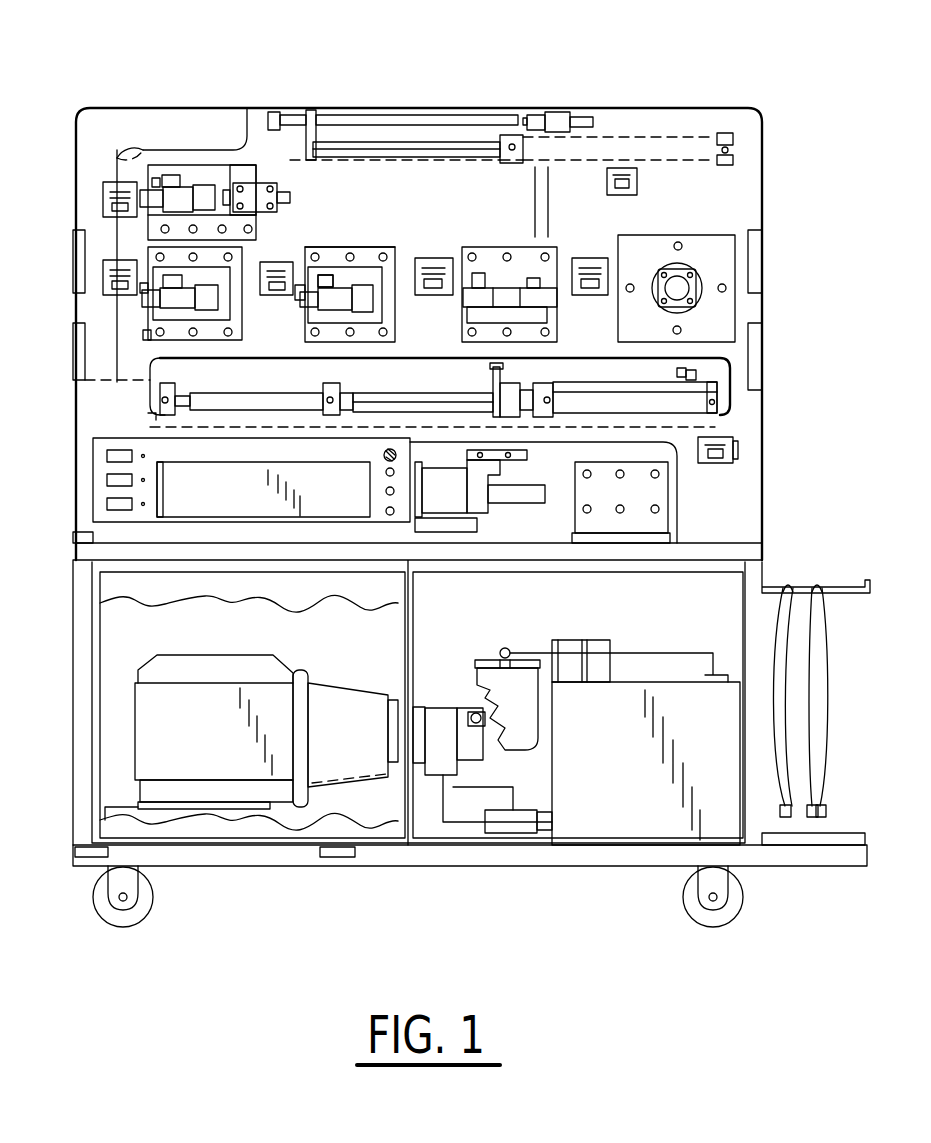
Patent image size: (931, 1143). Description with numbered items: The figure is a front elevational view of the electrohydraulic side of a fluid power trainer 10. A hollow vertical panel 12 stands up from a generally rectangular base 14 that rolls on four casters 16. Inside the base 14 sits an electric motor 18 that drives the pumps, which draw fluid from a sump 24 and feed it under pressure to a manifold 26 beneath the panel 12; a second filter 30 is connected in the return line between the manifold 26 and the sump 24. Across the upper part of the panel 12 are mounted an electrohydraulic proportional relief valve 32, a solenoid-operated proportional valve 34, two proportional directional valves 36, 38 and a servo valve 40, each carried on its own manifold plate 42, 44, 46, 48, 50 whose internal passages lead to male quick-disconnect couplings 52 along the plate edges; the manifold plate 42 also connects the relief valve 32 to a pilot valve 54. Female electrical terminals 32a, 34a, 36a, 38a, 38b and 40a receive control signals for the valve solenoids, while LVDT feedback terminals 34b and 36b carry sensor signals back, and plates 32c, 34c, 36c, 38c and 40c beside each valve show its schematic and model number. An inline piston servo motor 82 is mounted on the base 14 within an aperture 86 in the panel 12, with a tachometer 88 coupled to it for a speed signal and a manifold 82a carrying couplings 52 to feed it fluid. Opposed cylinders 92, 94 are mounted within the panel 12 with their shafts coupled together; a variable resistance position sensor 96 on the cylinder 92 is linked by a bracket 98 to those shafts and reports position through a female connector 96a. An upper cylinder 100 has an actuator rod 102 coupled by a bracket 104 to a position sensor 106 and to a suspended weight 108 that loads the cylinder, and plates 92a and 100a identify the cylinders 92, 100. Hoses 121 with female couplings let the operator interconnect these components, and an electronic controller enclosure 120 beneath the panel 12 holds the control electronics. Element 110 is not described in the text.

The fluid power trainer 10 is at (204, 40).
The hollow vertical panel 12 is at (755, 127).
The base 14 is at (78, 647).
The casters 16 is at (151, 910).
The electric motor 18 is at (212, 743).
The sump 24 is at (610, 832).
The manifold 26 is at (660, 490).
The second filter 30 is at (488, 690).
The electrohydraulic proportional relief valve 32 is at (185, 197).
The female electrical terminal 32a is at (172, 175).
The plate 32c is at (104, 183).
The solenoid-operated proportional valve 34 is at (143, 300).
The female electrical terminal 34a is at (165, 278).
The female terminal 34b is at (145, 288).
The plate 34c is at (107, 262).
The proportional directional valve 36 is at (333, 296).
The female electrical terminal 36a is at (325, 274).
The female terminal 36b is at (293, 298).
The plate 36c is at (282, 261).
The proportional directional valve 38 is at (486, 292).
The female electrical terminal 38a is at (475, 280).
The female electrical terminal 38b is at (535, 282).
The plate 38c is at (433, 256).
The servo valve 40 is at (727, 250).
The female electrical terminal 40a is at (684, 288).
The plate 40c is at (593, 297).
The manifold plate 42 is at (248, 165).
The manifold plate 44 is at (147, 334).
The manifold plate 46 is at (385, 247).
The manifold plate 48 is at (534, 247).
The manifold plate 50 is at (700, 280).
The male quick-disconnect couplings 52 is at (290, 198).
The pilot valve 54 is at (270, 198).
The inline piston servo motor 82 is at (453, 502).
The manifold 82a is at (482, 505).
The aperture 86 is at (662, 528).
The tachometer 88 is at (538, 495).
The cylinder 92 is at (694, 397).
The plate 92a is at (740, 448).
The cylinder 94 is at (303, 395).
The variable resistance position sensor 96 is at (681, 368).
The female electrical connector 96a is at (693, 378).
The bracket 98 is at (491, 377).
The upper cylinder 100 is at (632, 140).
The plate 100a is at (638, 168).
The actuator rod 102 is at (369, 147).
The bracket 104 is at (311, 112).
The position sensor 106 is at (554, 112).
The weight 108 is at (100, 397).
The hose guard 110 is at (144, 150).
The electronic controller enclosure 120 is at (88, 466).
The hoses 121 is at (844, 662).